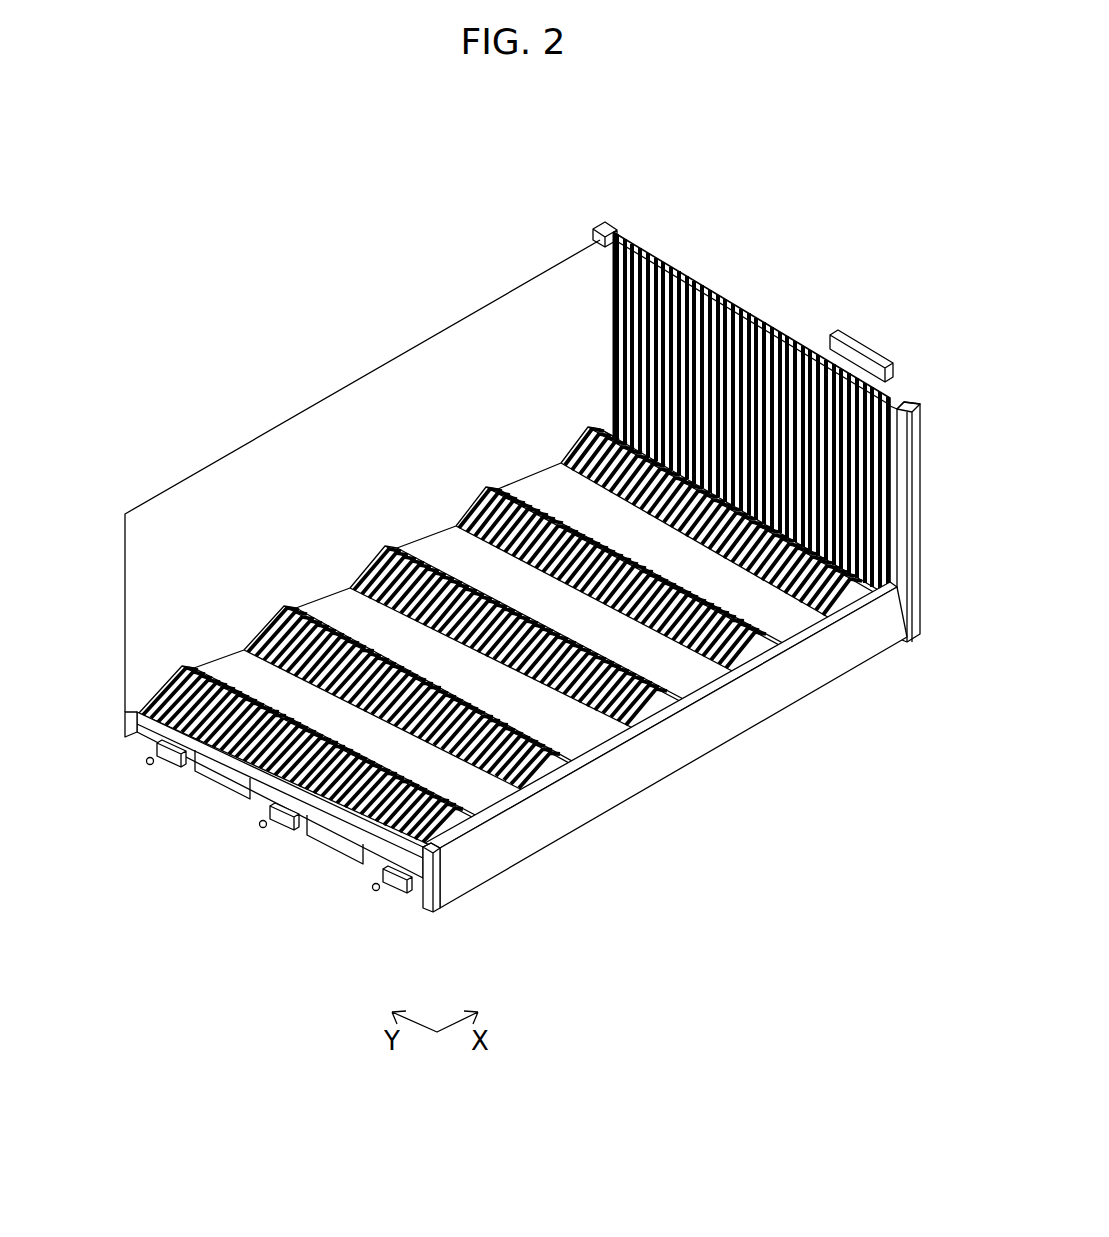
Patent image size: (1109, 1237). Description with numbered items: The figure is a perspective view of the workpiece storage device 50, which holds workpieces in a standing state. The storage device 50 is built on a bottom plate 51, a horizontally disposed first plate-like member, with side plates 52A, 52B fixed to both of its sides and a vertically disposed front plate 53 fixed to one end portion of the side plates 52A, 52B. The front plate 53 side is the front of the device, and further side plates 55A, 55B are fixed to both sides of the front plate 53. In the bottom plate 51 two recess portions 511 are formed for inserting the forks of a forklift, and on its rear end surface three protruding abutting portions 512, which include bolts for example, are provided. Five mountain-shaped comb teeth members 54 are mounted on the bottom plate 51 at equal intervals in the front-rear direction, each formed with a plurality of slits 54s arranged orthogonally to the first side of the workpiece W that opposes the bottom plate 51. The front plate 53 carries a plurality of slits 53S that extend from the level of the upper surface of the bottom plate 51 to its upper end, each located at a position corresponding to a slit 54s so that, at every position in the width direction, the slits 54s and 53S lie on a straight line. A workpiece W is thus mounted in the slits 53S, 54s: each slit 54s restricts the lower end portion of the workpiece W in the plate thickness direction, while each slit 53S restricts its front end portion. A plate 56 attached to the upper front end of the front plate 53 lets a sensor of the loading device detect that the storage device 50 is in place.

The storage device 50 is at (735, 223).
The bottom plate 51 is at (485, 769).
The recess portion 511 is at (200, 766).
The abutting portion 512 is at (160, 760).
The side plate 52A is at (595, 808).
The side plate 52B is at (130, 727).
The front plate 53 is at (787, 415).
The slit 53S is at (763, 324).
The comb teeth member 54 is at (520, 684).
The slit 54s is at (186, 665).
The side plate 55A is at (921, 540).
The side plate 55B is at (606, 230).
The plate 56 is at (862, 343).
The workpiece W is at (402, 378).